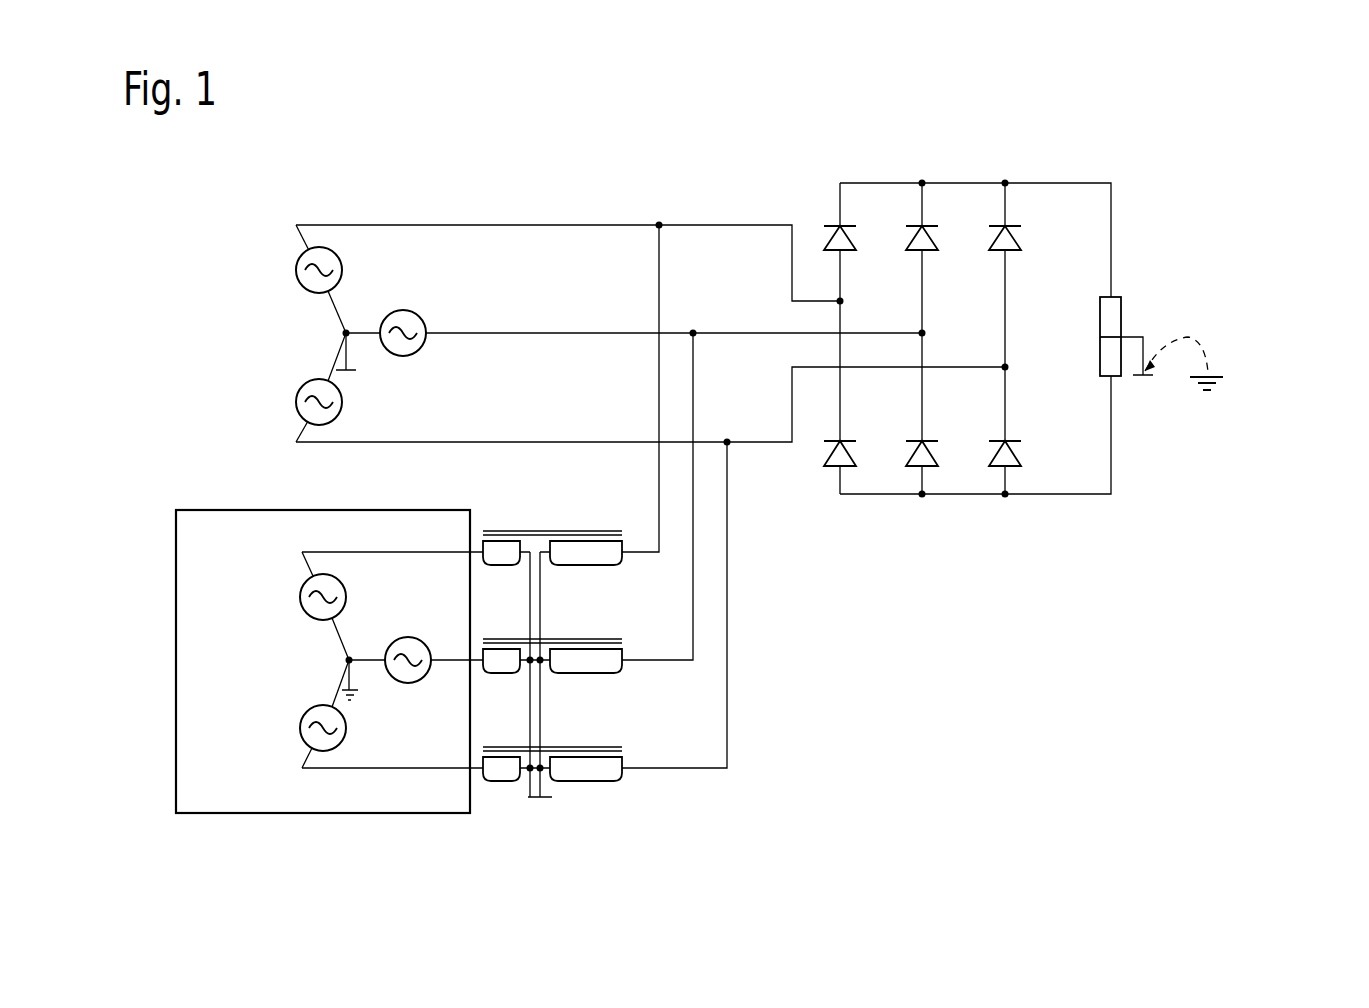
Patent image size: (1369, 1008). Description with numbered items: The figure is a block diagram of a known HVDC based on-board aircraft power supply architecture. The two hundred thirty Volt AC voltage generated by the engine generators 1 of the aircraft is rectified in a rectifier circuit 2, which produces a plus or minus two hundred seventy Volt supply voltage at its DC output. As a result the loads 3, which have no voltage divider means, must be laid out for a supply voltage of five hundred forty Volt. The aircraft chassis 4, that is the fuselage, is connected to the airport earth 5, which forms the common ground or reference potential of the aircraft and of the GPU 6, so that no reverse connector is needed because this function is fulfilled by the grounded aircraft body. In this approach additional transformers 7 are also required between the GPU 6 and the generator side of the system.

The engine generators 1 is at (406, 258).
The rectifier circuit 2 is at (819, 167).
The loads 3 is at (1116, 310).
The aircraft chassis 4 is at (1143, 378).
The airport earth 5 is at (1223, 383).
The GPU 6 is at (176, 662).
The transformers 7 is at (628, 822).